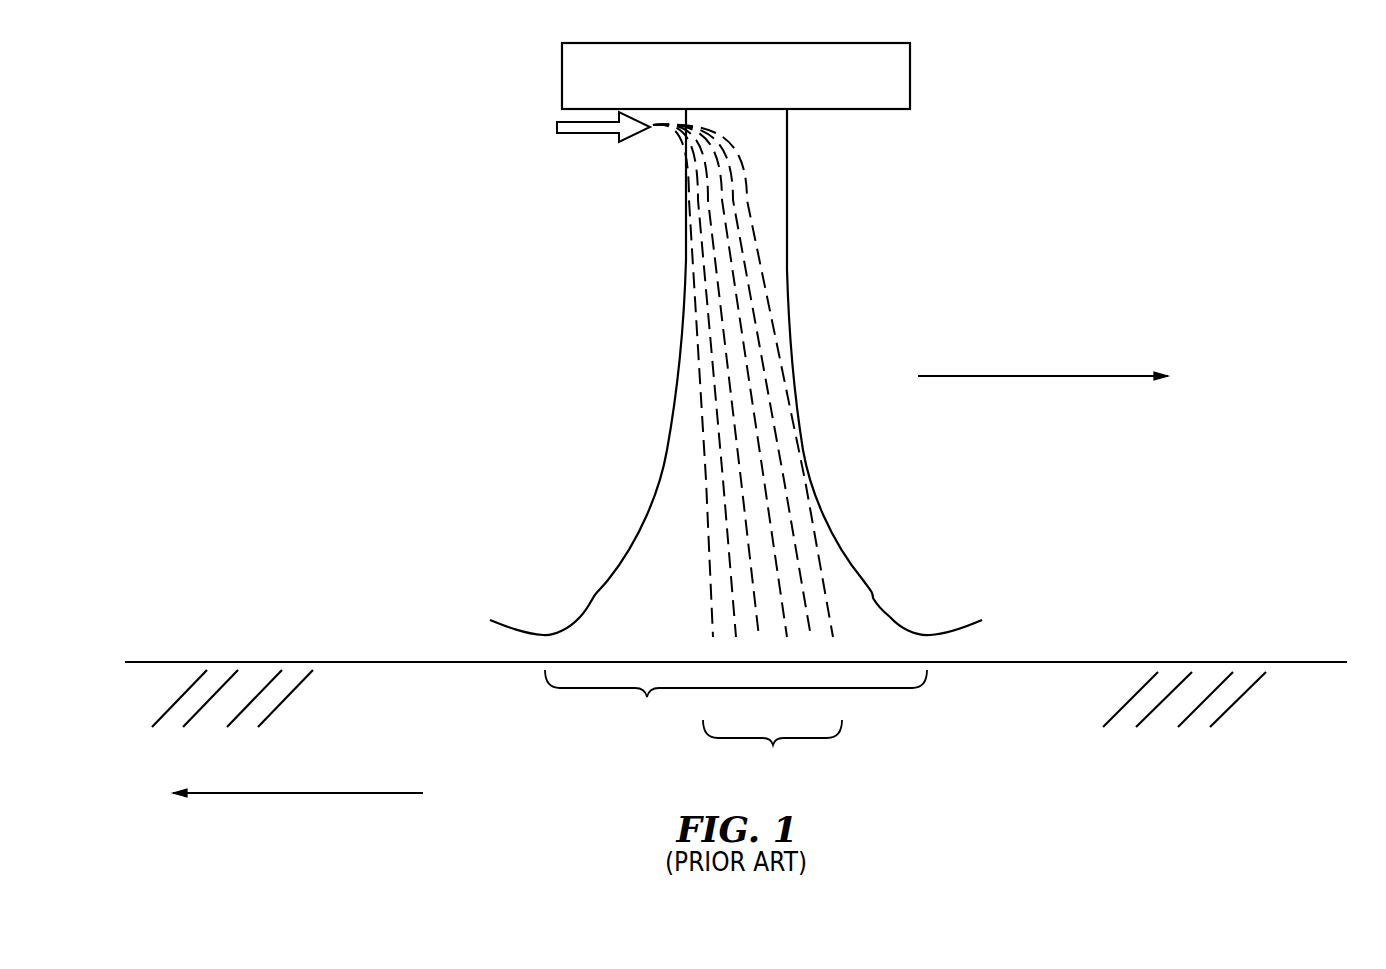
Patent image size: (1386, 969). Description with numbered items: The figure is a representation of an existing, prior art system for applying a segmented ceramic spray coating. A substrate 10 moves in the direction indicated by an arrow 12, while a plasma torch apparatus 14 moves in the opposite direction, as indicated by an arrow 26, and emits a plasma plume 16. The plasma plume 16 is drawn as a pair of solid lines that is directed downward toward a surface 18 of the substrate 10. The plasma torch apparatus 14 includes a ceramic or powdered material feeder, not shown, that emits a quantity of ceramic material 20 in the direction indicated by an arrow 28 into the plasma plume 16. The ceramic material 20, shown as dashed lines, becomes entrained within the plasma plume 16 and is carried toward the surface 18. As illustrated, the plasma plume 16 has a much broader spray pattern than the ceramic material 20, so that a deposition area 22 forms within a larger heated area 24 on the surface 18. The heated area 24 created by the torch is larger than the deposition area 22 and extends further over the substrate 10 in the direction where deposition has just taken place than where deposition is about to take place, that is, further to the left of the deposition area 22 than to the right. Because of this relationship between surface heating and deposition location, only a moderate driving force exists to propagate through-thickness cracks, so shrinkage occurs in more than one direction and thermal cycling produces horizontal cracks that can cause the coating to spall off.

The substrate 10 is at (1027, 746).
The arrow 12 is at (383, 793).
The plasma torch apparatus 14 is at (911, 80).
The plasma plume 16 is at (686, 224).
The surface 18 is at (372, 660).
The ceramic material 20 is at (703, 444).
The deposition area 22 is at (772, 752).
The heated area 24 is at (736, 701).
The arrow 26 is at (1026, 376).
The arrow 28 is at (573, 136).